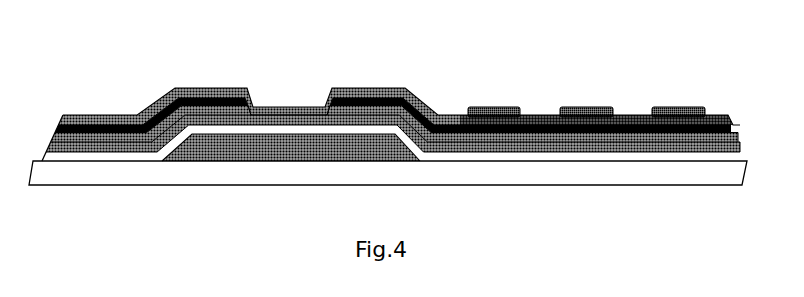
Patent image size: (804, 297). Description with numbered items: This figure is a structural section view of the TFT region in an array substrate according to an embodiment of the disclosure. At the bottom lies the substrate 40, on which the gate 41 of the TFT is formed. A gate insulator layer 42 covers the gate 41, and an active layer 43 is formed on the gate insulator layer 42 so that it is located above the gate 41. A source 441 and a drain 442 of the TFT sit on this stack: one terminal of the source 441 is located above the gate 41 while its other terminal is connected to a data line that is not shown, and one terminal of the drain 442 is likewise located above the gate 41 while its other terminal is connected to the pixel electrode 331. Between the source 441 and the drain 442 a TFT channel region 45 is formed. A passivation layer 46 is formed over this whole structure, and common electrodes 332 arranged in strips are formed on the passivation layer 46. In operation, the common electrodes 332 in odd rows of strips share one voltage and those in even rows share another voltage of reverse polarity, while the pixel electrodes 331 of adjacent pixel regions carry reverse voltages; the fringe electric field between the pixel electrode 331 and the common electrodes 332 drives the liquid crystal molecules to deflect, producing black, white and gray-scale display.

The substrate 40 is at (80, 173).
The gate 41 is at (366, 145).
The gate insulator layer 42 is at (412, 135).
The active layer 43 is at (212, 114).
The source 441 is at (118, 130).
The drain 442 is at (346, 107).
The TFT channel region 45 is at (290, 102).
The passivation layer 46 is at (630, 120).
The pixel electrode 331 is at (528, 132).
The common electrodes 332 is at (484, 116).